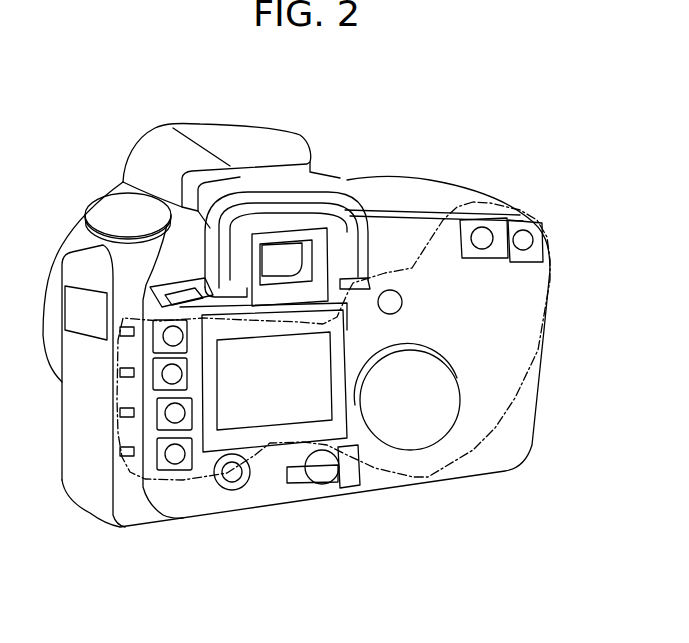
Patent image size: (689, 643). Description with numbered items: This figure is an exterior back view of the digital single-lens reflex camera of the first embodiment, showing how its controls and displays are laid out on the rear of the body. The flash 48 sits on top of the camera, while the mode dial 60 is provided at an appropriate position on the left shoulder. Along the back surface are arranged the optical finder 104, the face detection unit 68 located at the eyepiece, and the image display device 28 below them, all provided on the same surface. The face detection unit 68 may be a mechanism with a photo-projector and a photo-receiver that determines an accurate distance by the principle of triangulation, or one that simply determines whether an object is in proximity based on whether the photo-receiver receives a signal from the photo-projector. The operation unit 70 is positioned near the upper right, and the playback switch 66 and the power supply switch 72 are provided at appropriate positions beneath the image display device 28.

The image display device 28 is at (288, 407).
The flash 48 is at (190, 153).
The mode dial 60 is at (113, 213).
The playback switch 66 is at (237, 490).
The face detection unit 68 is at (305, 243).
The operation unit 70 is at (540, 241).
The power supply switch 72 is at (328, 485).
The optical finder 104 is at (302, 302).